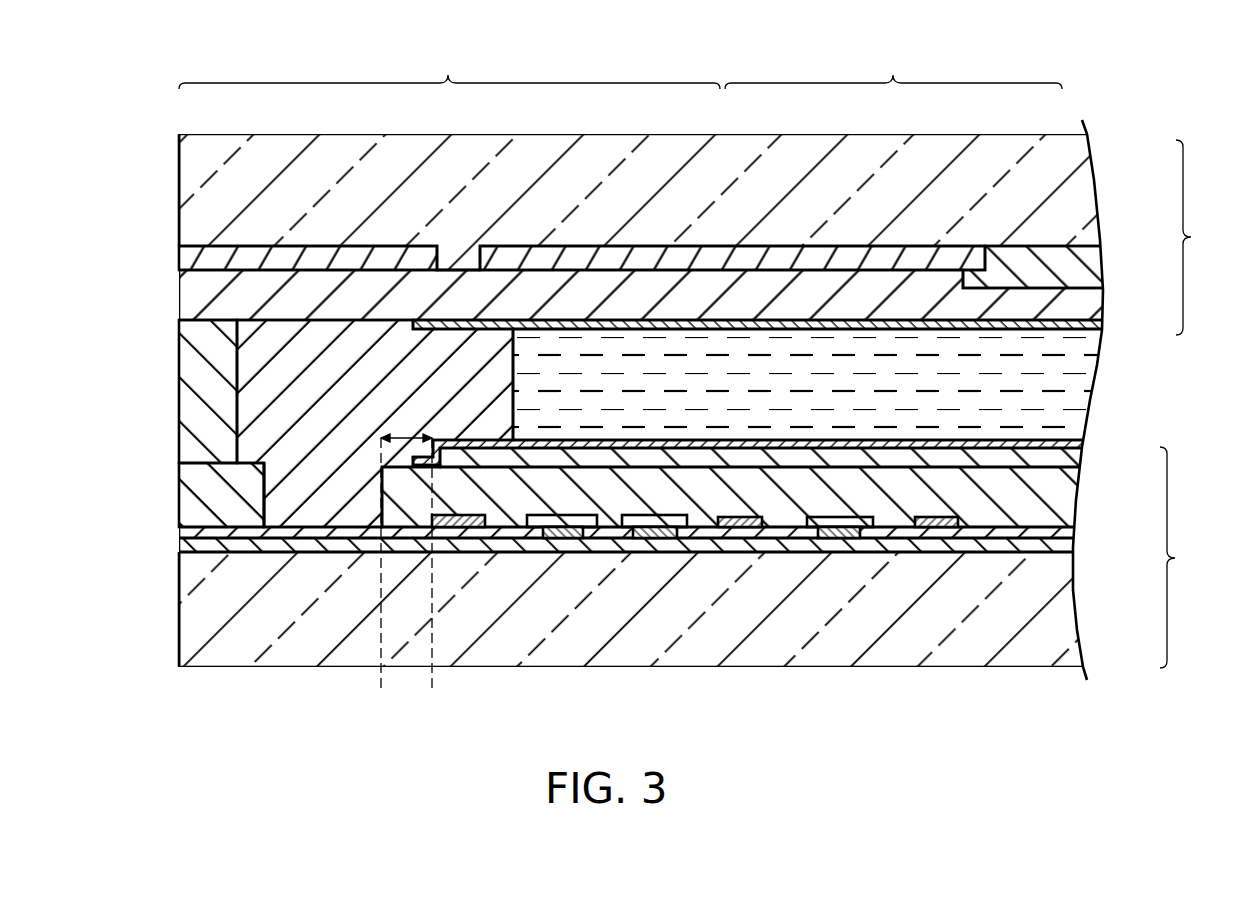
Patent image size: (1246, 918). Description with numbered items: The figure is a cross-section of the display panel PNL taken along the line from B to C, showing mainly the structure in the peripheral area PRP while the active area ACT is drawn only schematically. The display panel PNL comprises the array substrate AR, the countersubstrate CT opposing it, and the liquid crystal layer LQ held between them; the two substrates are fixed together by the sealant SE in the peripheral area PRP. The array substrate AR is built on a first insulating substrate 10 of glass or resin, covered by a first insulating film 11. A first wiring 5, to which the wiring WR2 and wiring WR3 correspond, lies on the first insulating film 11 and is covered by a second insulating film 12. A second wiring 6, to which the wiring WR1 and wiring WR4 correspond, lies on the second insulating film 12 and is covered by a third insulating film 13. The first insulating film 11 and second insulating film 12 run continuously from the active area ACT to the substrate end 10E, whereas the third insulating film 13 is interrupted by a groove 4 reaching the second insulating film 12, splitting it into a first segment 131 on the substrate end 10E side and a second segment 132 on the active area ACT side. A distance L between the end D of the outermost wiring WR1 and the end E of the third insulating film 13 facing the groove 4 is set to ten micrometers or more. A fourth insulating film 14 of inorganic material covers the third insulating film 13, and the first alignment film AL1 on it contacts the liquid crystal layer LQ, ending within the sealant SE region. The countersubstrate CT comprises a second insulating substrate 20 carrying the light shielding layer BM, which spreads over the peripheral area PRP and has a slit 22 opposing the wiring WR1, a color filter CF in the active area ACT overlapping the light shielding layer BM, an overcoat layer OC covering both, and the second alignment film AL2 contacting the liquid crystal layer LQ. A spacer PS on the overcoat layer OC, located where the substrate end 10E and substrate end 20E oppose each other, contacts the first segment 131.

The second insulating substrate 20 is at (179, 204).
The substrate end 20E is at (172, 162).
The slit 22 is at (464, 262).
The light shielding layer BM is at (179, 254).
The color filter CF is at (1105, 270).
The overcoat layer OC is at (181, 290).
The second alignment film AL2 is at (1102, 328).
The liquid crystal layer LQ is at (1082, 390).
The first alignment film AL1 is at (1080, 447).
The fourth insulating film 14 is at (1082, 465).
The third insulating film 13 is at (609, 506).
The second segment 132 is at (1060, 505).
The first segment 131 is at (181, 488).
The sealant SE is at (237, 350).
The spacer PS is at (183, 393).
The groove 4 is at (274, 504).
The second insulating film 12 is at (181, 531).
The first insulating film 11 is at (181, 551).
The first insulating substrate 10 is at (181, 620).
The substrate end 10E is at (172, 581).
The wiring WR1 is at (463, 553).
The wiring WR2 is at (550, 553).
The wiring WR3 is at (648, 553).
The wiring WR4 is at (728, 553).
The first wiring 5 is at (697, 632).
The second wiring 6 is at (695, 626).
The display panel PNL is at (1076, 96).
The end E is at (380, 578).
The end D is at (432, 578).
The distance L is at (406, 425).
The section line point B is at (178, 710).
The section line point C is at (1085, 715).
The peripheral area PRP is at (449, 66).
The active area ACT is at (893, 66).
The countersubstrate CT is at (1202, 237).
The array substrate AR is at (1186, 557).